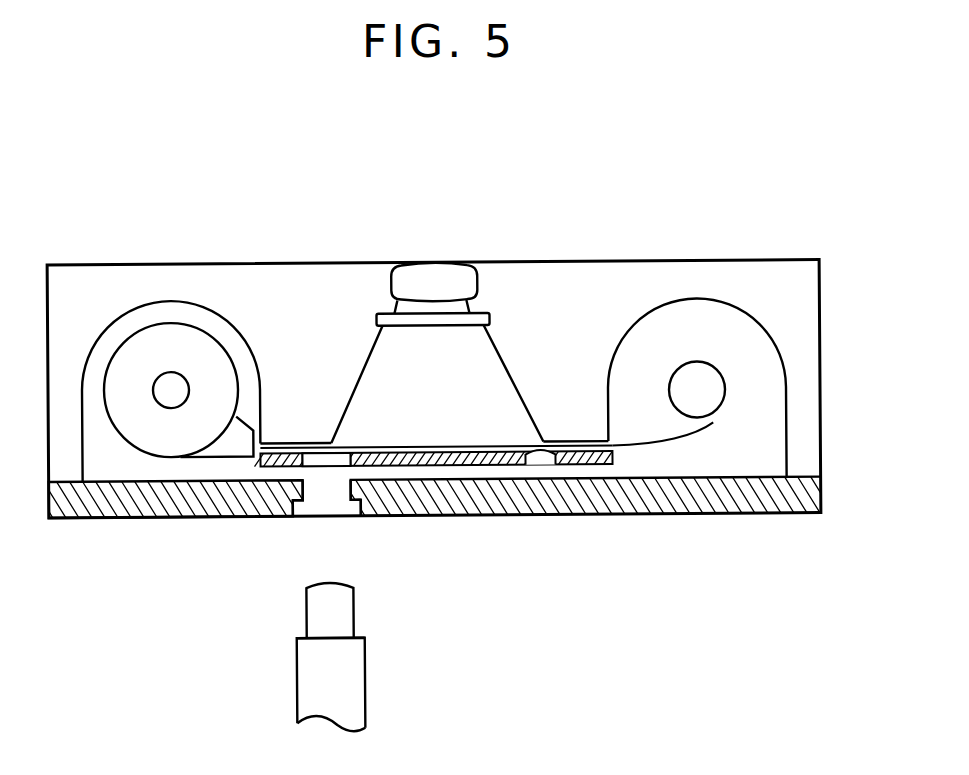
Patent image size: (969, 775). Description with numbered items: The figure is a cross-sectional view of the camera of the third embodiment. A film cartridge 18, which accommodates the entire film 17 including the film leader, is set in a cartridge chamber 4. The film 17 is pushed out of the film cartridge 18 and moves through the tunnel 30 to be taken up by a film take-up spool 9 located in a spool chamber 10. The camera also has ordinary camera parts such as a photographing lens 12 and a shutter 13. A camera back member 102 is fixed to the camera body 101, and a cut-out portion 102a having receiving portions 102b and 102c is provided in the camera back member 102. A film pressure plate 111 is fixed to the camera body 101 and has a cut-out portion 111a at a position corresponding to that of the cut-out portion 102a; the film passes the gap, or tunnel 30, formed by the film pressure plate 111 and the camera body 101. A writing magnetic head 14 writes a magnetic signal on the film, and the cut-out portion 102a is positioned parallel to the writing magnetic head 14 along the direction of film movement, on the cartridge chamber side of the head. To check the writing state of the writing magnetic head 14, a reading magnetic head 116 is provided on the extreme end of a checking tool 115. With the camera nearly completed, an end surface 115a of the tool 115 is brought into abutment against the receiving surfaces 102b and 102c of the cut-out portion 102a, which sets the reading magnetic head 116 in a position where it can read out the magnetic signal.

The cartridge chamber 4 is at (145, 305).
The film take-up spool 9 is at (705, 366).
The spool chamber 10 is at (783, 379).
The photographing lens 12 is at (433, 275).
The shutter 13 is at (490, 325).
The writing magnetic head 14 is at (545, 463).
The film 17 is at (707, 435).
The film cartridge 18 is at (150, 441).
The tunnel 30 is at (277, 445).
The camera body 101 is at (708, 277).
The camera back member 102 is at (785, 508).
The cut-out portion 102a is at (323, 514).
The receiving portion 102b is at (293, 516).
The receiving portion 102c is at (356, 513).
The film pressure plate 111 is at (603, 466).
The cut-out portion 111a is at (340, 456).
The tool 115 is at (357, 686).
The end surface 115a is at (296, 632).
The reading magnetic head 116 is at (312, 599).